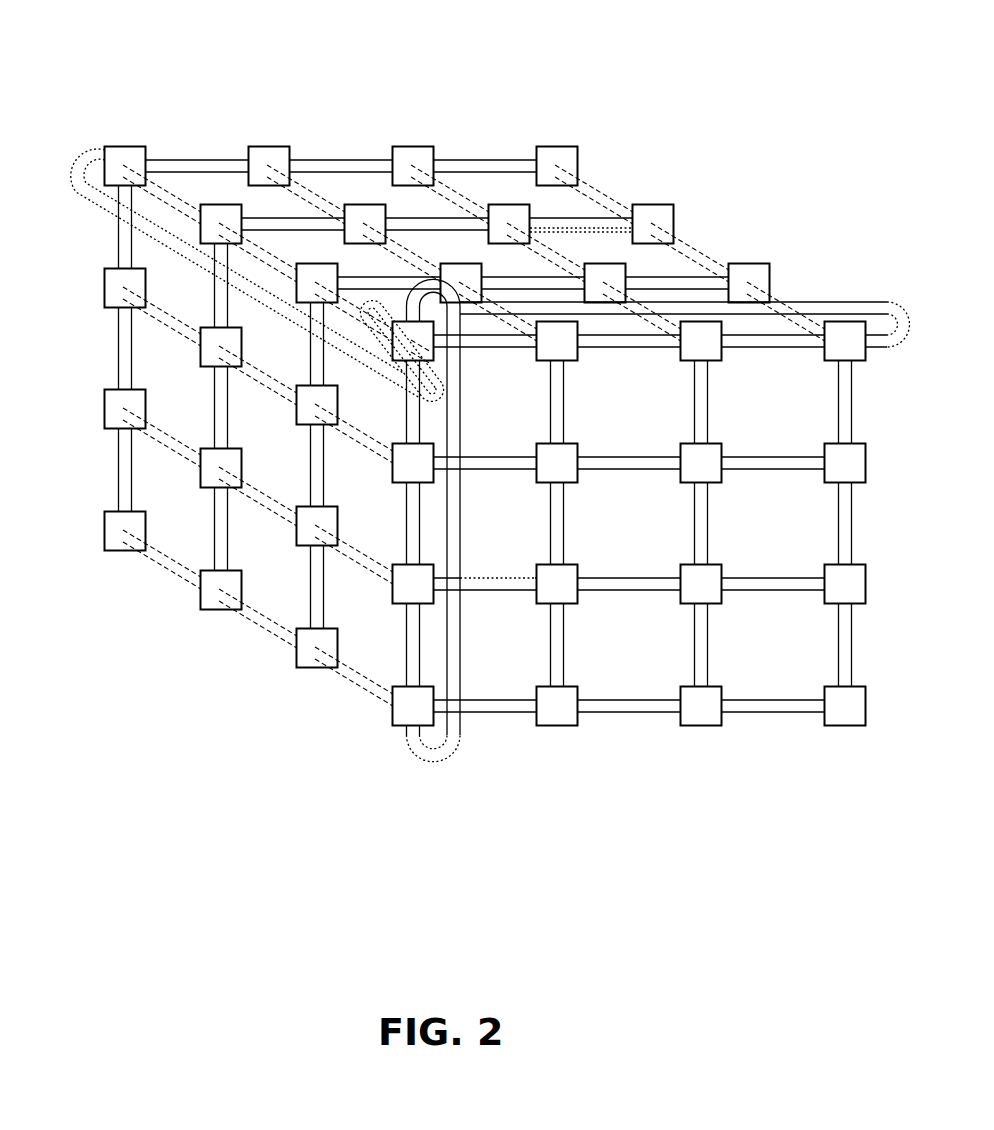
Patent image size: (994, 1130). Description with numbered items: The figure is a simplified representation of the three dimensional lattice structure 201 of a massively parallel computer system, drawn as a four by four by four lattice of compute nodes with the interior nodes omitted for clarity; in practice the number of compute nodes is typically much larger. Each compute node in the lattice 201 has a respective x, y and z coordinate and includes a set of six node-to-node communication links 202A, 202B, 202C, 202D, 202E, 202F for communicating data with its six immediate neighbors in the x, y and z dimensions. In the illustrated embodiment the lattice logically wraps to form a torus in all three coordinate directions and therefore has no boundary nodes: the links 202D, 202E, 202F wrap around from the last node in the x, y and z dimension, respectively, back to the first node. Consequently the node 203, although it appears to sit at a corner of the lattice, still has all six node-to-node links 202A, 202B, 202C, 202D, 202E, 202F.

The three dimensional lattice structure 201 is at (591, 75).
The node-to-node communication link 202A is at (463, 349).
The node-to-node communication link 202B is at (410, 386).
The node-to-node communication link 202C is at (365, 298).
The node-to-node communication link 202D is at (862, 301).
The node-to-node communication link 202E is at (452, 762).
The node-to-node communication link 202F is at (61, 155).
The node 203 is at (393, 346).